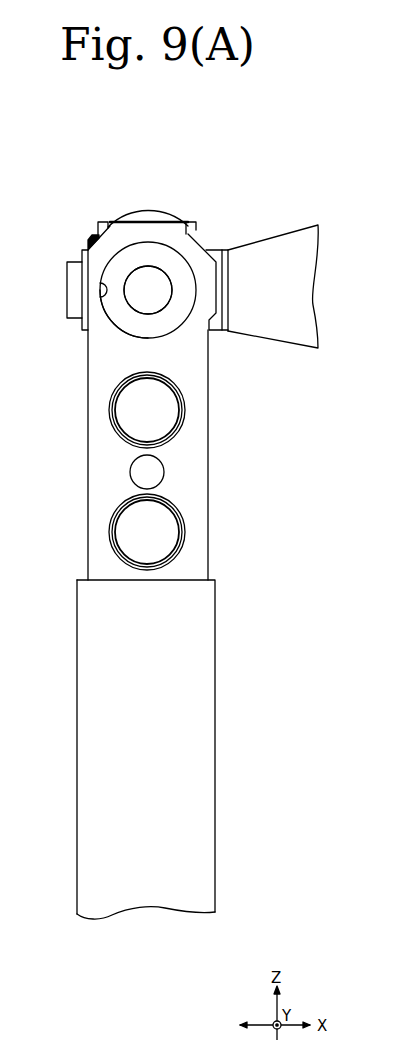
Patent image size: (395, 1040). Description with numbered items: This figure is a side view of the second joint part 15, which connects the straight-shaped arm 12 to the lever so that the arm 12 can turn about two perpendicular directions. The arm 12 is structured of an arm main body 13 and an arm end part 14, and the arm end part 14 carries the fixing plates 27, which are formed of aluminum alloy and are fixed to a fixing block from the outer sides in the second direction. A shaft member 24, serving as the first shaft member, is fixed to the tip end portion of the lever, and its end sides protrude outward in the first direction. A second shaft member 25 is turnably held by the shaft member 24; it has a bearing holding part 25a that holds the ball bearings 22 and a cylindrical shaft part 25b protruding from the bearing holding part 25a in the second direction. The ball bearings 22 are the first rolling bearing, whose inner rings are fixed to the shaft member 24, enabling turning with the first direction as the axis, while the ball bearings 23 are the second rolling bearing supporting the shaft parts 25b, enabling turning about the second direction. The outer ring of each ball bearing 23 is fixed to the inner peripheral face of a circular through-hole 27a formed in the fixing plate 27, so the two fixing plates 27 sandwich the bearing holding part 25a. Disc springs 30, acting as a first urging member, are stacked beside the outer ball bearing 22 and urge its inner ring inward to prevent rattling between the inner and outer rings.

The arm 12 is at (184, 749).
The arm main body 13 is at (215, 730).
The arm end part 14 is at (184, 403).
The fixing plate 27 is at (208, 530).
The second joint part 15 is at (275, 138).
The ball bearing 22 is at (101, 222).
The ball bearing 23 is at (125, 333).
The shaft member 24 is at (268, 339).
The shaft member 25 is at (138, 182).
The bearing holding part 25a is at (132, 208).
The shaft part 25b is at (150, 266).
The through-hole 27a is at (101, 297).
The disc spring 30 is at (92, 240).